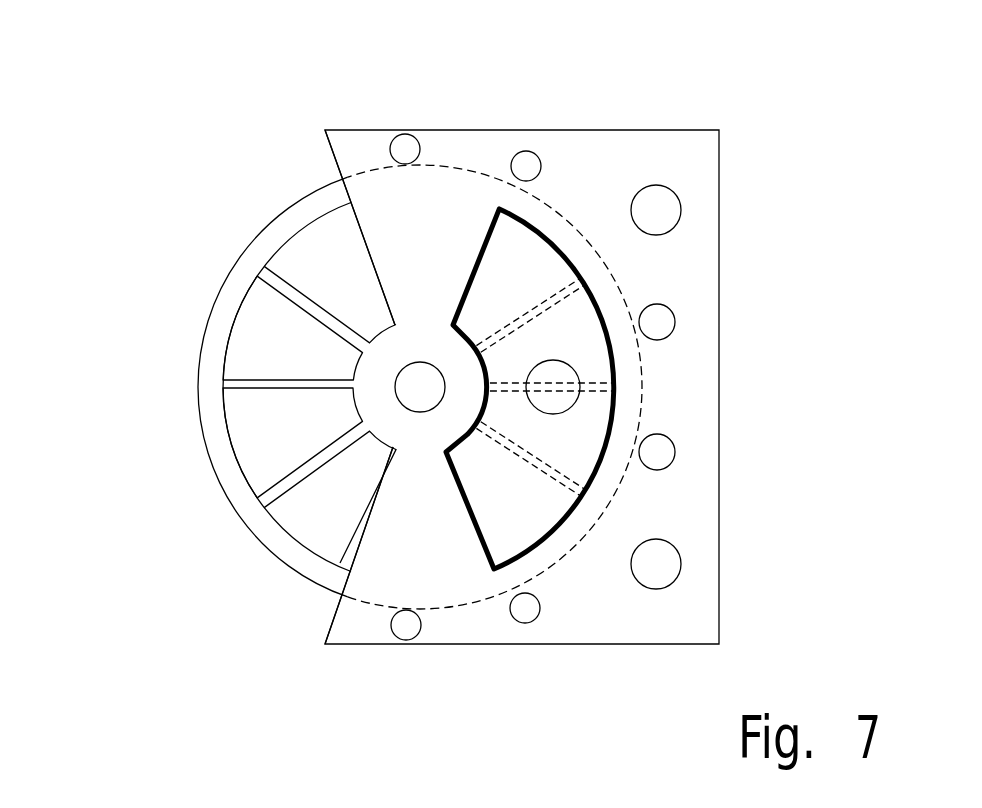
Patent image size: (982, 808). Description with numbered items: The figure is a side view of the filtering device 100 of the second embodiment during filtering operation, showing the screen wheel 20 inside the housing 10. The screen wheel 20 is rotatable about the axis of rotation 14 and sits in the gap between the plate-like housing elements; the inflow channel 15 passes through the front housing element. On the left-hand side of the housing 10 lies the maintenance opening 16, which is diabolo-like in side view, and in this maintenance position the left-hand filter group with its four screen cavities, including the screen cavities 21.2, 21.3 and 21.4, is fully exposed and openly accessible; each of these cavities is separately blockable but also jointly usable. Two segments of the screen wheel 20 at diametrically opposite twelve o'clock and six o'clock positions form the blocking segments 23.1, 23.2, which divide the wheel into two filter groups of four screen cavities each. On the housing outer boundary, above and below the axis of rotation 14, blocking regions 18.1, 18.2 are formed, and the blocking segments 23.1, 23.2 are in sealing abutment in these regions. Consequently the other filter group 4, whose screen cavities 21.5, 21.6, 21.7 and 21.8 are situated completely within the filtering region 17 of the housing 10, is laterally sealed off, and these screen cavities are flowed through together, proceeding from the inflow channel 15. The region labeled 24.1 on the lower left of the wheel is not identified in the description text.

The filtering device 100 is at (160, 95).
The housing 10 is at (720, 128).
The axis of rotation 14 is at (427, 378).
The inflow channel 15 is at (560, 387).
The maintenance opening 16 is at (258, 593).
The filtering region 17 is at (563, 300).
The filter group 4 is at (573, 260).
The blocking region 18.1 is at (412, 178).
The blocking segment 23.1 is at (360, 227).
The blocking region 18.2 is at (406, 596).
The blocking segment 23.2 is at (359, 545).
The screen wheel 20 is at (197, 400).
The screen cavity 21.2 is at (270, 443).
The screen cavity 21.3 is at (258, 353).
The screen cavity 21.4 is at (332, 277).
The screen cavity 21.5 is at (537, 262).
The screen cavity 21.6 is at (595, 357).
The screen cavity 21.7 is at (597, 455).
The screen cavity 21.8 is at (522, 527).
The pocket 24.1 is at (323, 537).